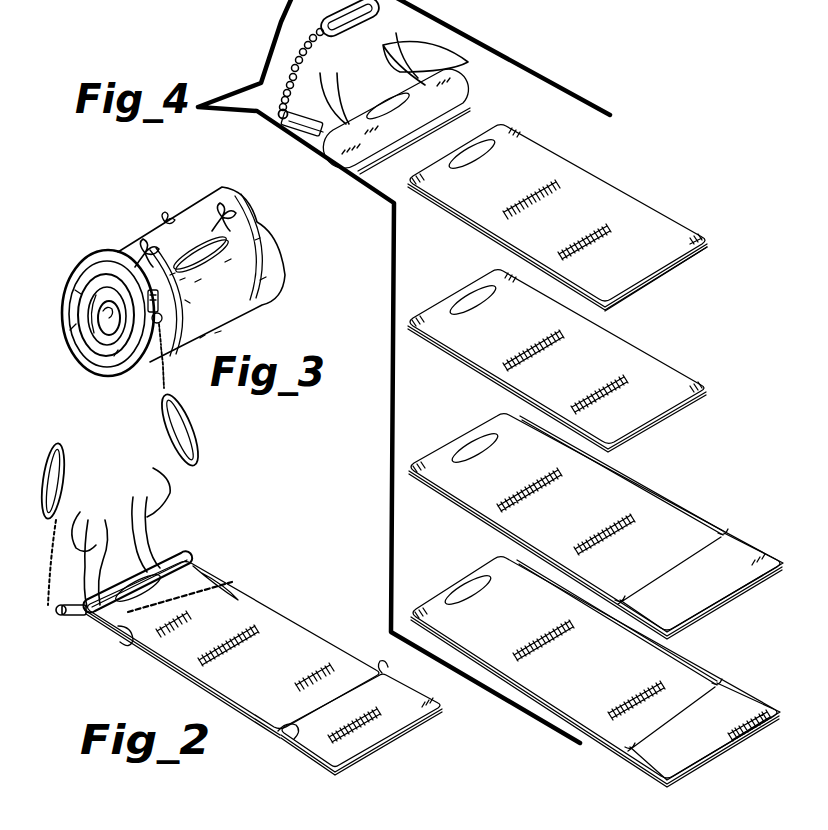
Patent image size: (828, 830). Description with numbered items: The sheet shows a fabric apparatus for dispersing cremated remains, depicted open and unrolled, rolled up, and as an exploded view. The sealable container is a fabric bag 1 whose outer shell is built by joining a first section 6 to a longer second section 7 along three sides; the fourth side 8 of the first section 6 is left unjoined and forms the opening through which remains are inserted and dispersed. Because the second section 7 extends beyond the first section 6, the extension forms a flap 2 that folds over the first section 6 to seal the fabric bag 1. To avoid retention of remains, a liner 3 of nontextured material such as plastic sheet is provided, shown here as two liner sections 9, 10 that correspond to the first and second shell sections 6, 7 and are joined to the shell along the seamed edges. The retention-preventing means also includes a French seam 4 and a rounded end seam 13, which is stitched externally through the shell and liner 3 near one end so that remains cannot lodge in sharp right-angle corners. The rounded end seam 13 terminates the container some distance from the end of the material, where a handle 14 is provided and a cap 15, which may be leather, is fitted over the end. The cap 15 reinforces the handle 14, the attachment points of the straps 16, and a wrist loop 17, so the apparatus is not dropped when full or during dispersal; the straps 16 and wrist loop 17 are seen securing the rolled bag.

In FIG. 2, the fabric bag 1 is at (280, 633).
In FIG. 4, the flap 2 is at (707, 598).
In FIG. 2, the flap 2 is at (398, 717).
In FIG. 2, the liner 3 is at (287, 742).
In FIG. 2, the French seam 4 is at (380, 675).
In FIG. 4, the first section 6 is at (640, 210).
In FIG. 4, the second section 7 is at (700, 742).
In FIG. 4, the fourth side 8 is at (673, 265).
In FIG. 4, the liner section 9 is at (664, 375).
In FIG. 4, the liner section 10 is at (742, 560).
In FIG. 2, the rounded end seam 13 is at (205, 585).
In FIG. 4, the handle 14 is at (464, 98).
In FIG. 2, the handle 14 is at (183, 565).
In FIG. 2, the cap 15 is at (195, 566).
In FIG. 4, the straps 16 is at (407, 78).
In FIG. 2, the straps 16 is at (90, 537).
In FIG. 4, the wrist loop 17 is at (326, 31).
In FIG. 2, the wrist loop 17 is at (57, 460).